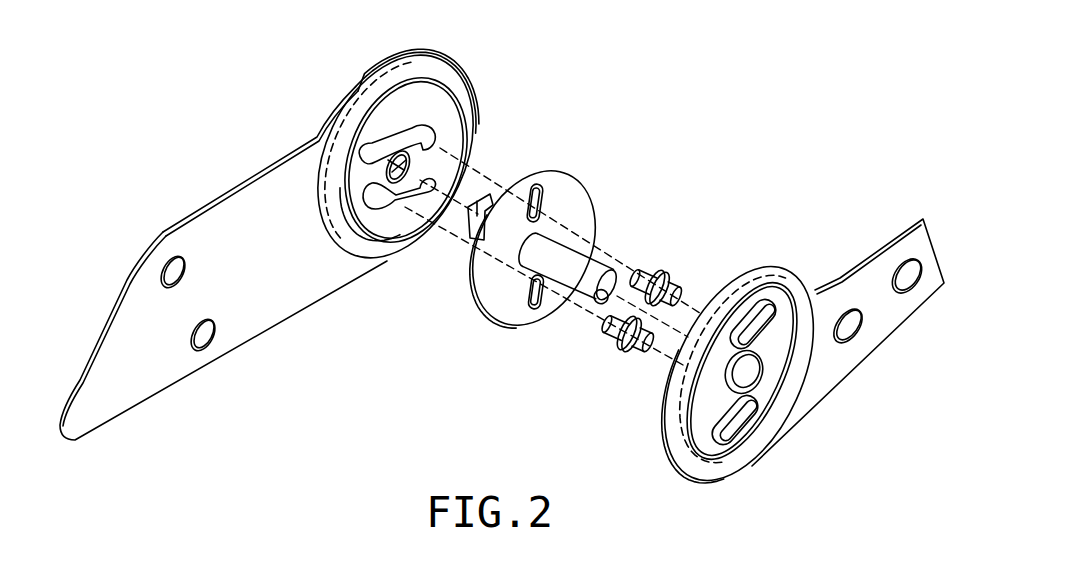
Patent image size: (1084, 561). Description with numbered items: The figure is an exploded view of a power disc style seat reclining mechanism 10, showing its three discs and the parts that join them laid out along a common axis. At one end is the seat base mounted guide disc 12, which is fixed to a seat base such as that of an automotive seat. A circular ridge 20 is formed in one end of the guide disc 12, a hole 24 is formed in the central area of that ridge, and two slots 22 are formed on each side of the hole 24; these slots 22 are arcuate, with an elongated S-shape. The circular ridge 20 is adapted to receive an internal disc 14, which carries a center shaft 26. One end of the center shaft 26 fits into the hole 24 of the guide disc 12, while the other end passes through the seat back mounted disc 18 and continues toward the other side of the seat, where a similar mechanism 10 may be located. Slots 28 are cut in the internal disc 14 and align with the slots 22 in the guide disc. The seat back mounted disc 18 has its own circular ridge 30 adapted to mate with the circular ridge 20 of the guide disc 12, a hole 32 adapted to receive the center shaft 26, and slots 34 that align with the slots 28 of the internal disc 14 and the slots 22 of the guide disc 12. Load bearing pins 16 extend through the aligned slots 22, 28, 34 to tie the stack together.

The power disc style seat reclining mechanism 10 is at (768, 112).
The seat base mounted guide disc 12 is at (433, 118).
The internal disc 14 is at (557, 183).
The load bearing pins 16 is at (665, 276).
The seat back mounted disc 18 is at (775, 398).
The circular ridge 20 is at (383, 97).
The slots 22 is at (440, 145).
The hole 24 is at (362, 178).
The center shaft 26 is at (472, 225).
The slots 28 is at (541, 200).
The circular ridge 30 is at (752, 268).
The hole 32 is at (752, 373).
The slots 34 is at (766, 320).